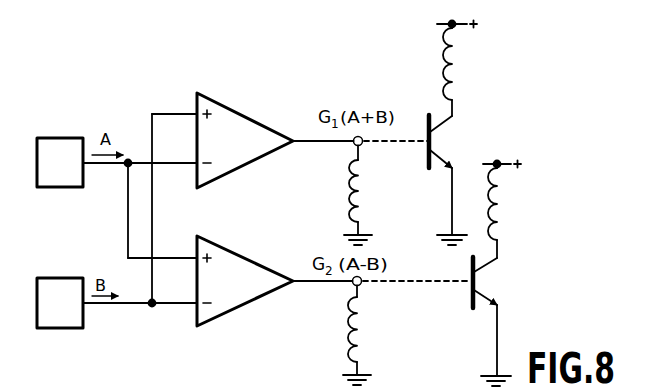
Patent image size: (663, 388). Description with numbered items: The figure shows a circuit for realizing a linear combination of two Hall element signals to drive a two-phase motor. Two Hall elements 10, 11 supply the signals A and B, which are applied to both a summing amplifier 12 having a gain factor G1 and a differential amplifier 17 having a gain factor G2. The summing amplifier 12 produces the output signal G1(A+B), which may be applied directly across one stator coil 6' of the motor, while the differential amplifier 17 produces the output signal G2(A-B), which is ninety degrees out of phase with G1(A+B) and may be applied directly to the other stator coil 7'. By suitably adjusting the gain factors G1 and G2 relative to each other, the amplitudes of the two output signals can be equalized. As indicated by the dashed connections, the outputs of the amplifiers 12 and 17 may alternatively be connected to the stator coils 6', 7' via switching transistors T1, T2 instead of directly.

The Hall element 10 is at (66, 138).
The Hall element 11 is at (66, 278).
The summing amplifier 12 is at (250, 120).
The differential amplifier 17 is at (244, 259).
The stator coil 6' is at (412, 133).
The stator coil 7' is at (433, 273).
The switching transistor T1 is at (447, 137).
The switching transistor T2 is at (481, 281).